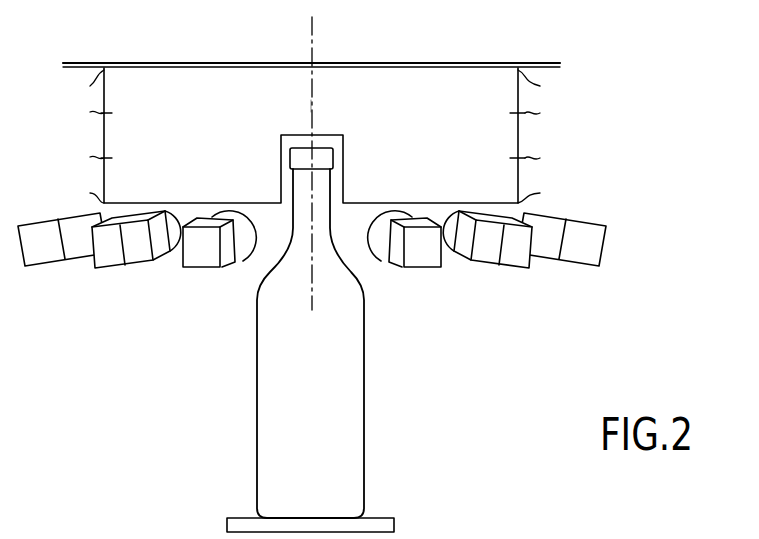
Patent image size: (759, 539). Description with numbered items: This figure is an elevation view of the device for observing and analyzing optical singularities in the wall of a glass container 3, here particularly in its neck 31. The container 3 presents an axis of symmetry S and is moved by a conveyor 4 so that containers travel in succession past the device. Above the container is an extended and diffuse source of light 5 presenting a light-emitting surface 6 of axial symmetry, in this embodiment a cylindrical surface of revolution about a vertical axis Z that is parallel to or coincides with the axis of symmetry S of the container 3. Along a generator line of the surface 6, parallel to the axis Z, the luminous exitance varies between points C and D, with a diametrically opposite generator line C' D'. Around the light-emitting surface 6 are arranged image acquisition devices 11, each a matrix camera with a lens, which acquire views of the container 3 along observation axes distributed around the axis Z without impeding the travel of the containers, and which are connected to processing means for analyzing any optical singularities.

The glass container 3 is at (294, 333).
The neck 31 is at (320, 215).
The conveyor 4 is at (380, 525).
The extended and diffuse source of light 5 is at (559, 97).
The light-emitting surface 6 is at (466, 82).
The image acquisition device 11 is at (200, 262).
The vertical axis Z is at (312, 22).
The axis of symmetry S is at (313, 106).